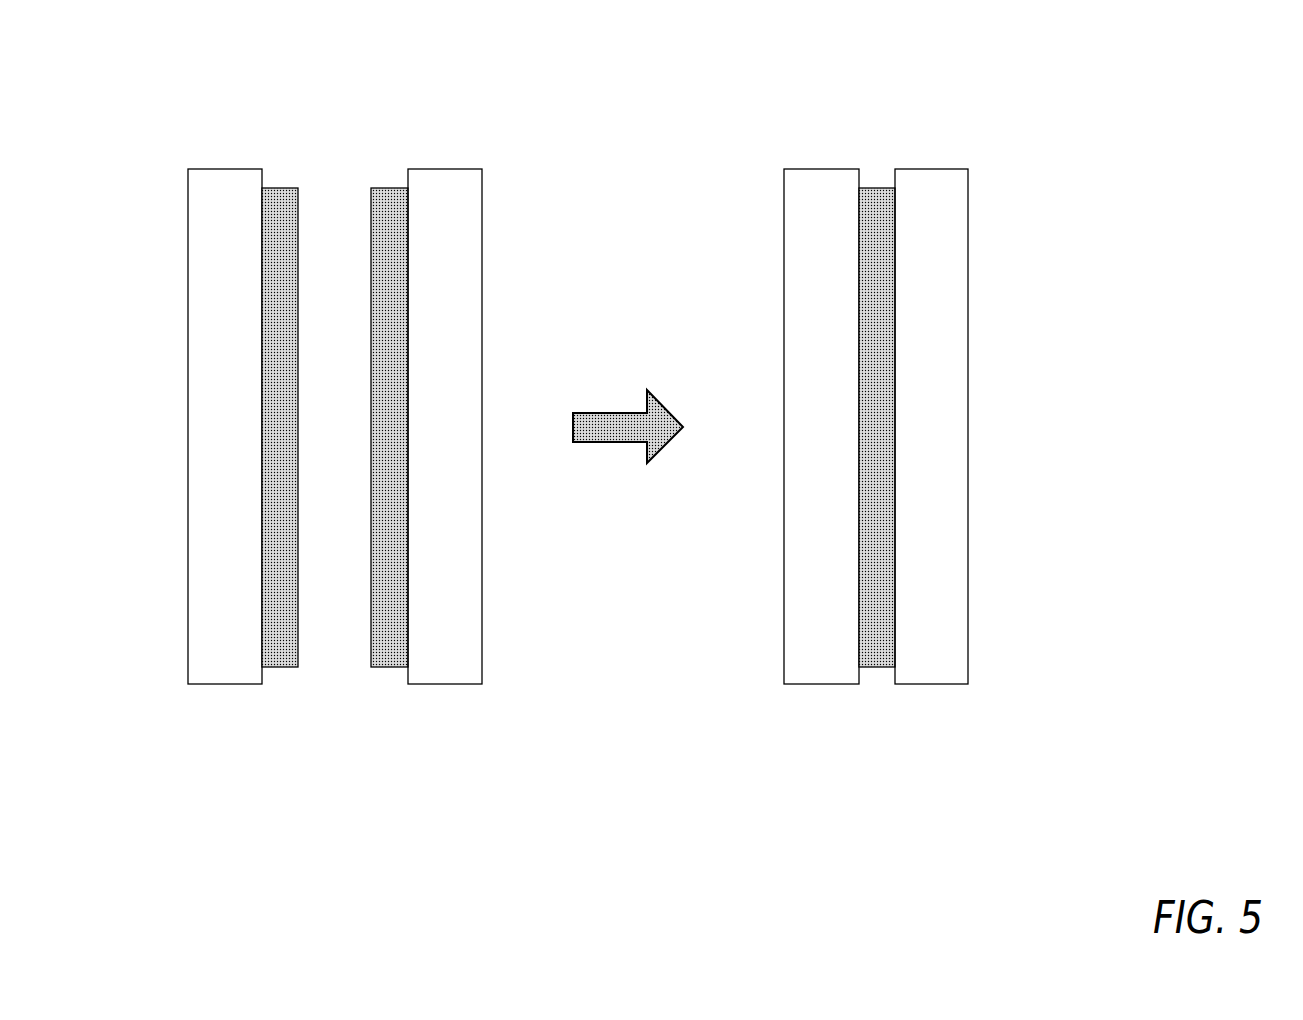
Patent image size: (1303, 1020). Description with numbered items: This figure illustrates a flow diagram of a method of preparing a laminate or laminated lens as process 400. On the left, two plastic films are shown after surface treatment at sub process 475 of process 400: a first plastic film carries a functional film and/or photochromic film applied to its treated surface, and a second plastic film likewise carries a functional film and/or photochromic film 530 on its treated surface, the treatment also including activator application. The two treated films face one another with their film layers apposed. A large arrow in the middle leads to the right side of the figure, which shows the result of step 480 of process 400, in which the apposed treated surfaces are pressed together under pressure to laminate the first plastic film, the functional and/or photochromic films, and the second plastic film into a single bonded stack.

The process 400 is at (573, 52).
The sub process 475 is at (299, 90).
The laminating step 480 is at (970, 92).
The second bonding layer 530 is at (388, 667).